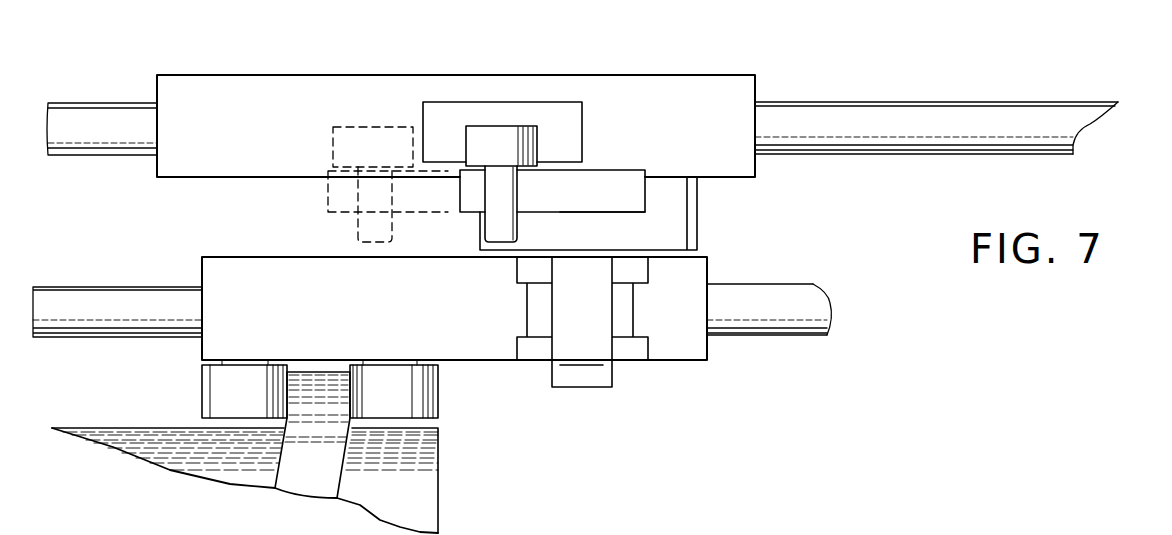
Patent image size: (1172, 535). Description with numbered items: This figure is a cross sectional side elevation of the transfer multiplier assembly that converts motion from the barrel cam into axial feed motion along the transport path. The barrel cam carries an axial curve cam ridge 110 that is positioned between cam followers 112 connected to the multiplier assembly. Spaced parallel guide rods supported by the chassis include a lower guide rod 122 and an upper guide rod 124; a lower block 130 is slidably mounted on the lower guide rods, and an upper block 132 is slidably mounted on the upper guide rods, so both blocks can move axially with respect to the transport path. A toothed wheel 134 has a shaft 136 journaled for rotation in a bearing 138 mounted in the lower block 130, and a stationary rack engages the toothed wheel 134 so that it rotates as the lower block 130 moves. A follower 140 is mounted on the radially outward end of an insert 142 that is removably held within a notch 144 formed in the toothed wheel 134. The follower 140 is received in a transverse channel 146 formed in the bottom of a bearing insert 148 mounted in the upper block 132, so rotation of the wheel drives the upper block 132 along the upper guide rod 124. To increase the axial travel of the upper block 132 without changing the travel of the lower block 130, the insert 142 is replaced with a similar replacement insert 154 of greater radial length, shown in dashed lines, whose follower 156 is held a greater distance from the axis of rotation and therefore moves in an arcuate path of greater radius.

The axial curve cam ridge 110 is at (323, 395).
The cam followers 112 is at (227, 383).
The lower guide rod 122 is at (138, 310).
The upper guide rod 124 is at (120, 120).
The lower block 130 is at (295, 272).
The upper block 132 is at (322, 95).
The toothed wheel 134 is at (667, 200).
The shaft 136 is at (593, 353).
The bearing 138 is at (532, 350).
The follower 140 is at (522, 148).
The insert 142 is at (635, 193).
The notch 144 is at (608, 212).
The transverse channel 146 is at (515, 125).
The bearing insert 148 is at (567, 120).
The replacement insert 154 is at (338, 193).
The replacement follower 156 is at (388, 140).